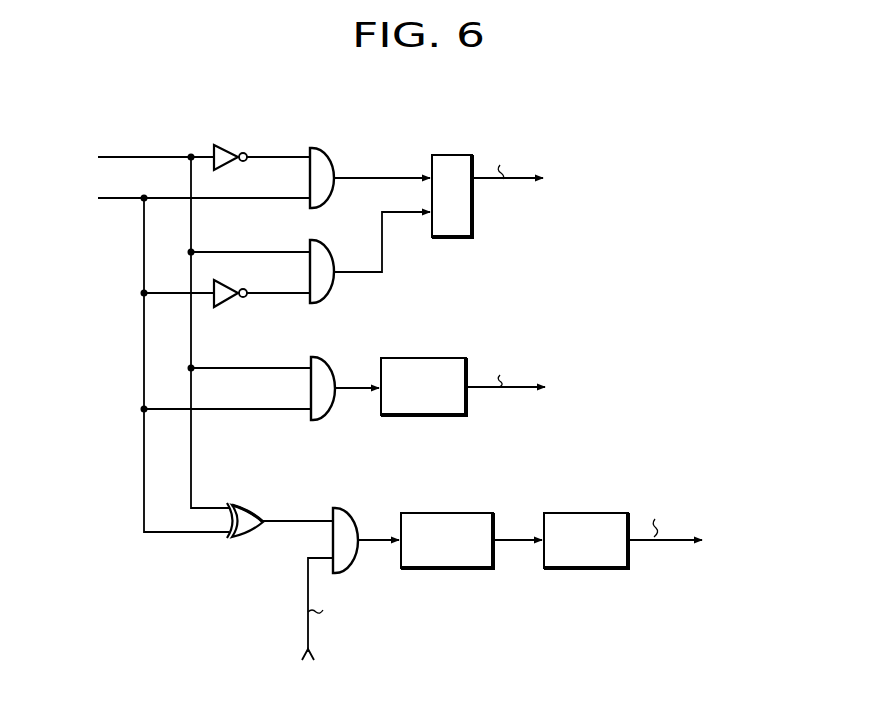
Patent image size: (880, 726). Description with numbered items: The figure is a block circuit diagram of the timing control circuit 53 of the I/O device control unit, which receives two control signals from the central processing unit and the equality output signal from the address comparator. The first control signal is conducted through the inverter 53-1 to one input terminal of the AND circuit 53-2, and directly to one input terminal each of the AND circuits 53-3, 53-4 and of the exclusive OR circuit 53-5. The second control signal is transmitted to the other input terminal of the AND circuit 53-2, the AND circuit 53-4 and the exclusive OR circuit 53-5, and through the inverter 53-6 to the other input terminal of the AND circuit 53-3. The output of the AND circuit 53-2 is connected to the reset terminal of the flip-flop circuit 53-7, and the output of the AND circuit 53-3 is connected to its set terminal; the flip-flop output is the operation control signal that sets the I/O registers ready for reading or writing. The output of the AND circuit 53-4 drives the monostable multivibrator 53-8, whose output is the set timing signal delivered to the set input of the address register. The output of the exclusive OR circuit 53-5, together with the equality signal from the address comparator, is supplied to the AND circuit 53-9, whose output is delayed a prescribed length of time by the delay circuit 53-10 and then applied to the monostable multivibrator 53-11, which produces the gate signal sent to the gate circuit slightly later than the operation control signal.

The timing control circuit 53 is at (403, 309).
The inverter 53-1 is at (232, 147).
The AND circuit 53-2 is at (334, 157).
The AND circuit 53-3 is at (337, 254).
The AND circuit 53-4 is at (334, 366).
The exclusive OR circuit 53-5 is at (248, 505).
The inverter 53-6 is at (240, 278).
The flip-flop circuit 53-7 is at (451, 154).
The monostable multivibrator 53-8 is at (406, 358).
The AND circuit 53-9 is at (347, 510).
The delay circuit 53-10 is at (430, 513).
The monostable multivibrator 53-11 is at (572, 513).